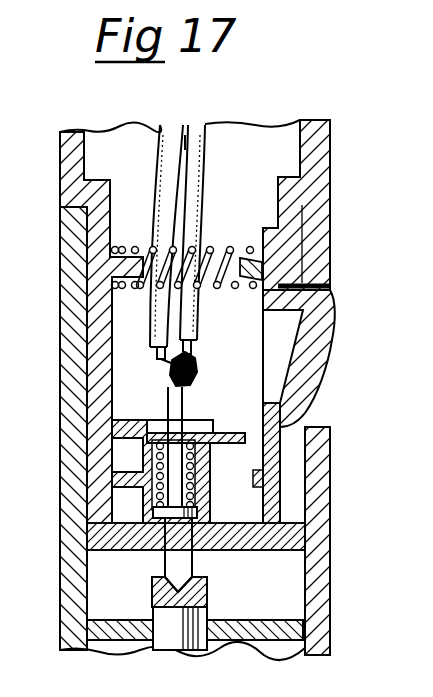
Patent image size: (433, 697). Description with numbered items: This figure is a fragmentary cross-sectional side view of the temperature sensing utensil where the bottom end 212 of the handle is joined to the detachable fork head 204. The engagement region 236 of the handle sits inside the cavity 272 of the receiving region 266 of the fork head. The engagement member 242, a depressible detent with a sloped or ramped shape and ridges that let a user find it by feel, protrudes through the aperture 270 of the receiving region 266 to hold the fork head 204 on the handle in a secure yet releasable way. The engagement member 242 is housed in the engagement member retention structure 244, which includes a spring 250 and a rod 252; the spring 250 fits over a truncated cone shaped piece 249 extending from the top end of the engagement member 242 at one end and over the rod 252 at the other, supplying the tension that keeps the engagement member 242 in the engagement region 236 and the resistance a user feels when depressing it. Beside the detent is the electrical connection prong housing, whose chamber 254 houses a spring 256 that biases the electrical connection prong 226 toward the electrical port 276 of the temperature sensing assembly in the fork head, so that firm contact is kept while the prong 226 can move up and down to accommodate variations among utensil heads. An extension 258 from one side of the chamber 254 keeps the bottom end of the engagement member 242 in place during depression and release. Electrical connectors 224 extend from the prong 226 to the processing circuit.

The detachable fork head 204 is at (62, 598).
The bottom end of handle 212 is at (332, 174).
The electrical connectors 224 is at (184, 135).
The electrical connection prong 226 is at (207, 563).
The engagement region 236 is at (95, 377).
The engagement member 242 is at (335, 318).
The engagement member retention structure 244 is at (130, 292).
The truncated cone shaped piece 249 is at (237, 290).
The spring 250 is at (230, 252).
The rod 252 is at (122, 268).
The chamber 254 is at (140, 506).
The spring 256 is at (157, 437).
The extension 258 is at (230, 432).
The receiving region 266 is at (338, 541).
The aperture 270 is at (320, 417).
The cavity 272 is at (282, 600).
The electrical port 276 is at (167, 647).